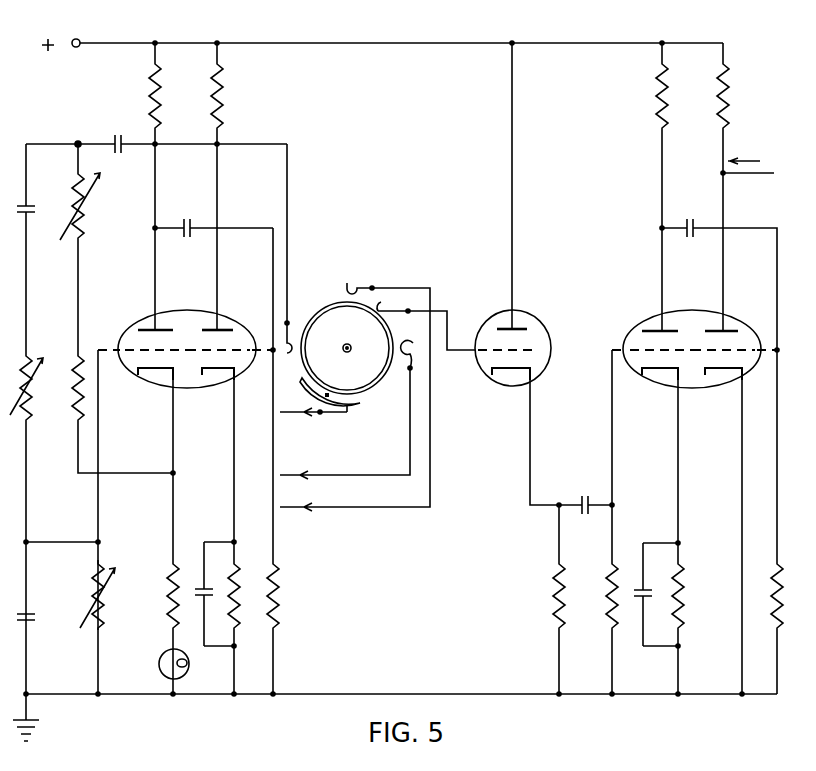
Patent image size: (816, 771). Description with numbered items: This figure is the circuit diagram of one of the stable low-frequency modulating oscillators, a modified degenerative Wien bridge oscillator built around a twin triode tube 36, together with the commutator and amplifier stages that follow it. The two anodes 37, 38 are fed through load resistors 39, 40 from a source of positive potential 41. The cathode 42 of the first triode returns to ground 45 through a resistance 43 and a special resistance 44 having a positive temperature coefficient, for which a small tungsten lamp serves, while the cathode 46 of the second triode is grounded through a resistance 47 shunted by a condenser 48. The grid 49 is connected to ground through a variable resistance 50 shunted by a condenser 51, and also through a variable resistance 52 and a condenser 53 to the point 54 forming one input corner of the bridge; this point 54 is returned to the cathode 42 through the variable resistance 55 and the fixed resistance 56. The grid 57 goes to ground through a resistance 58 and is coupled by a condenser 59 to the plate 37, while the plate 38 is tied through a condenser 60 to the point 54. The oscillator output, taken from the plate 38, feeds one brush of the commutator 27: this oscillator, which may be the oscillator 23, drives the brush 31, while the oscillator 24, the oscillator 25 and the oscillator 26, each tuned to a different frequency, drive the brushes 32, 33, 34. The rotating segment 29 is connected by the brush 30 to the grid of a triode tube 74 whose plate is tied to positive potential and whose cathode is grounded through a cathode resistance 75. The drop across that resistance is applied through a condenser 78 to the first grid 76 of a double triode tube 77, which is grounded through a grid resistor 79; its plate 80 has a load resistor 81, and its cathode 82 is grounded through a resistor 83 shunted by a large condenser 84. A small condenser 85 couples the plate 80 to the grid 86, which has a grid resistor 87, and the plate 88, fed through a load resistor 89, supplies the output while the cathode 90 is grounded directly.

The source of positive potential 41 is at (77, 38).
The load resistor 39 is at (155, 105).
The load resistor 40 is at (219, 108).
The point forming one input corner of the bridge circuit 54 is at (77, 141).
The condenser 60 is at (121, 140).
The condenser 53 is at (28, 208).
The variable resistance 55 is at (82, 220).
The condenser 59 is at (186, 219).
The oscillator 23 is at (251, 219).
The twin triode tube 36 is at (125, 320).
The anode 37 is at (142, 329).
The anode 38 is at (222, 329).
The grid 49 is at (145, 352).
The grid 57 is at (235, 350).
The cathode 42 is at (157, 372).
The cathode 46 is at (218, 372).
The fixed resistance 56 is at (78, 395).
The variable resistance 52 is at (35, 398).
The commutator 27 is at (343, 266).
The brush 32 is at (356, 284).
The brush 31 is at (288, 322).
The brush 30 is at (377, 305).
The segment of the commutator 29 is at (346, 395).
The brush 33 is at (412, 368).
The brush 34 is at (352, 405).
The oscillator 26 is at (340, 433).
The oscillator 25 is at (349, 488).
The oscillator 24 is at (351, 522).
The triode tube 74 is at (497, 316).
The condenser 78 is at (577, 496).
The cathode resistance 75 is at (556, 607).
The grid resistor 79 is at (609, 607).
The large condenser 84 is at (640, 590).
The resistor 83 is at (682, 614).
The grid resistor 87 is at (775, 608).
The load resistor 81 is at (658, 82).
The load resistor 89 is at (730, 107).
The small condenser 85 is at (690, 217).
The double triode tube 77 is at (630, 333).
The plate 80 is at (657, 329).
The plate 88 is at (728, 329).
The first grid 76 is at (645, 352).
The grid 86 is at (740, 350).
The cathode 82 is at (660, 372).
The cathode 90 is at (722, 372).
The variable resistance 50 is at (96, 612).
The condenser 51 is at (38, 617).
The ground 45 is at (30, 693).
The resistance 43 is at (170, 595).
The special resistance 44 is at (158, 664).
The condenser 48 is at (212, 600).
The resistance 47 is at (238, 595).
The resistance 58 is at (280, 605).